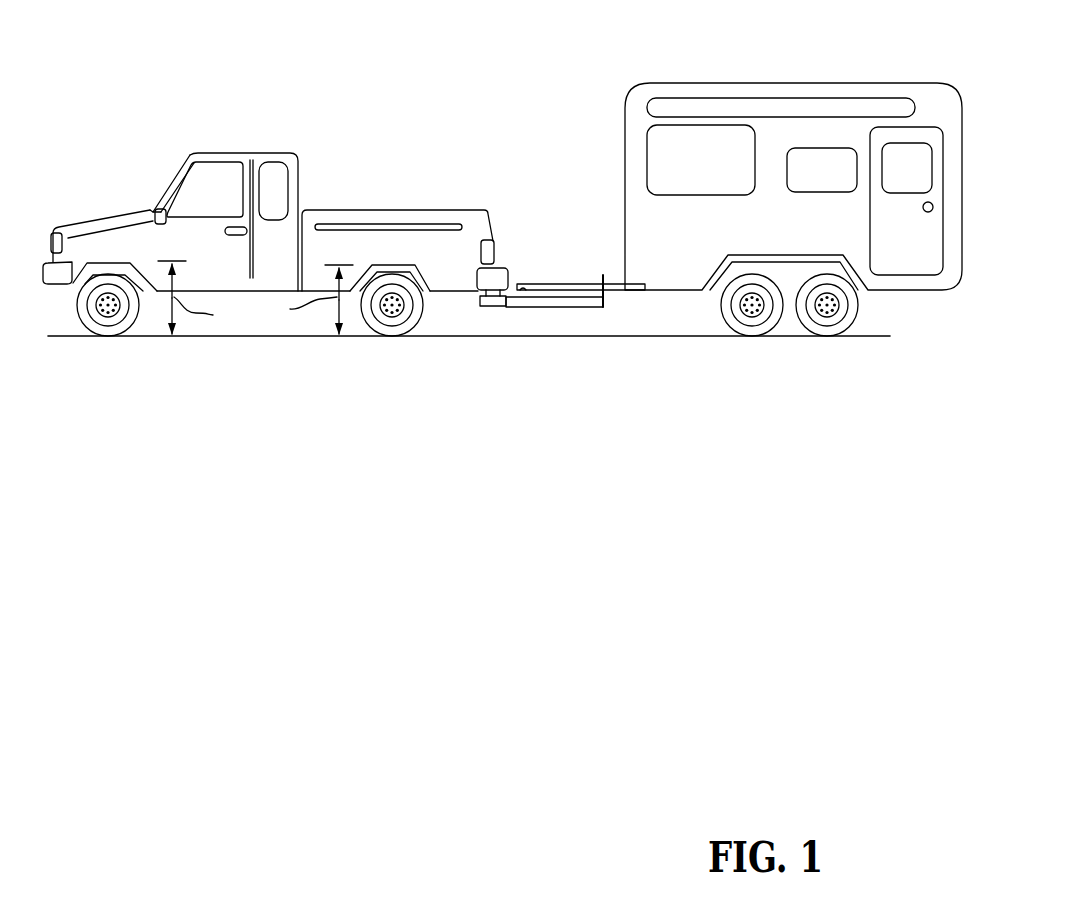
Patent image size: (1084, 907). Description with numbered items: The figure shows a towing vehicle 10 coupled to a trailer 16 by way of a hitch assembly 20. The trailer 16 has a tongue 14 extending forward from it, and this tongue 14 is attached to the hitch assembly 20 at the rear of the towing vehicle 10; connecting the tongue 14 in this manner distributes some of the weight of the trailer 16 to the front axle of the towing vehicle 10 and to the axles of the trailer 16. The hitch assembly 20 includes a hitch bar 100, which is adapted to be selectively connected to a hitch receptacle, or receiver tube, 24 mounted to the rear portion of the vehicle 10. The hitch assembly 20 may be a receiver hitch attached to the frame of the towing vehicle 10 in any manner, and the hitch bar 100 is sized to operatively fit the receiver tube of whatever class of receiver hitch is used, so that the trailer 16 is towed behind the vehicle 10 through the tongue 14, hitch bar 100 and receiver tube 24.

The towing vehicle 10 is at (251, 134).
The trailer 16 is at (801, 76).
The tongue 14 is at (580, 282).
The hitch assembly 20 is at (516, 282).
The hitch receptacle 24 is at (483, 302).
The hitch bar 100 is at (502, 214).